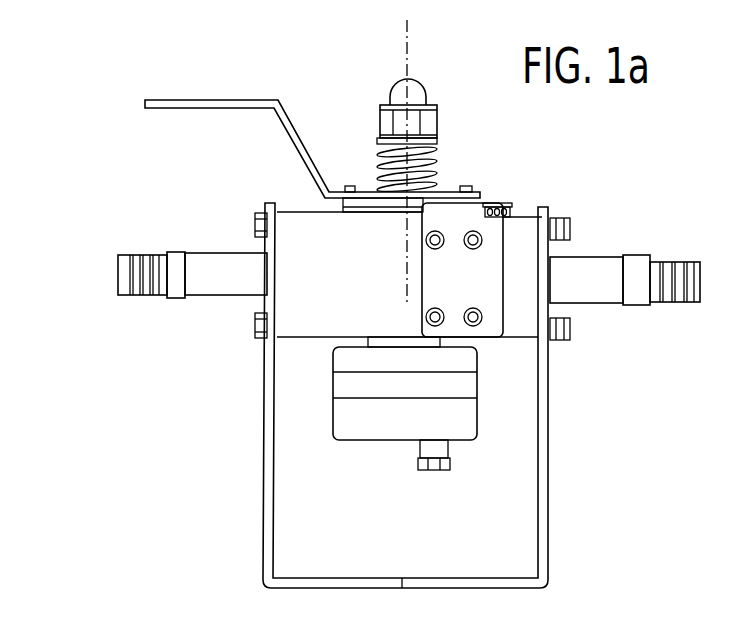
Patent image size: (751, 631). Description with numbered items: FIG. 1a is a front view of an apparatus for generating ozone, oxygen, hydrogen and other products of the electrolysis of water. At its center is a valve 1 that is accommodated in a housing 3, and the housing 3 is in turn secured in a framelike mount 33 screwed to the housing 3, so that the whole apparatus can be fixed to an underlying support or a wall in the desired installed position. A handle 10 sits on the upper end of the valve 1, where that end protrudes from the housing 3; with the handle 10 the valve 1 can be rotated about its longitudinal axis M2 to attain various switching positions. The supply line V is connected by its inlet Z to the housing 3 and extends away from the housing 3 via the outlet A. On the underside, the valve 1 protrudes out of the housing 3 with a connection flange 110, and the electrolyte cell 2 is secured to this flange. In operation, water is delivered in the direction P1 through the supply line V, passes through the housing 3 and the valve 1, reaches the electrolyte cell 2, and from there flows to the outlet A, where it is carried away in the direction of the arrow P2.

The valve 1 is at (438, 127).
The electrolyte cell 2 is at (345, 415).
The housing 3 is at (527, 235).
The handle 10 is at (193, 100).
The mount 33 is at (268, 507).
The connection flange 110 is at (385, 340).
The longitudinal axis M2 is at (405, 40).
The supply line V is at (597, 251).
The inlet Z is at (217, 265).
The outlet A is at (605, 283).
The direction of water delivery P1 is at (166, 275).
The direction of water removal P2 is at (655, 282).